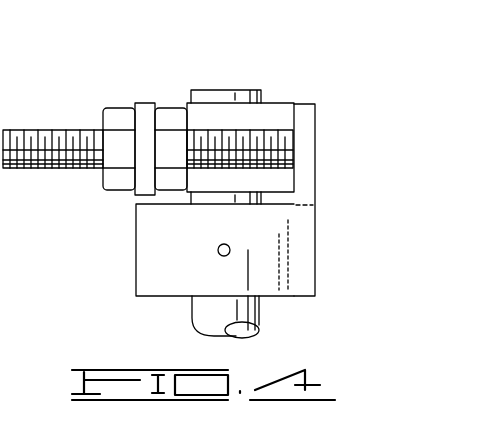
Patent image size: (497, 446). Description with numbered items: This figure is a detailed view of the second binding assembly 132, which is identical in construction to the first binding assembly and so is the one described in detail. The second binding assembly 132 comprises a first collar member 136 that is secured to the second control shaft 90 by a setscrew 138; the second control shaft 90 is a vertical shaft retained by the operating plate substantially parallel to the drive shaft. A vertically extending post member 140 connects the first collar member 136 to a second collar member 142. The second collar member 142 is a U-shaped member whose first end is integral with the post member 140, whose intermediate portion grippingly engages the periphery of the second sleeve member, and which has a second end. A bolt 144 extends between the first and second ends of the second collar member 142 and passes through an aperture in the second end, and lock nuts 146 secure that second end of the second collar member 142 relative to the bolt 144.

The second binding assembly 132 is at (255, 44).
The second control shaft 90 is at (218, 90).
The second collar member 142 is at (145, 103).
The bolt 144 is at (27, 128).
The lock nuts 146 is at (160, 199).
The first collar member 136 is at (147, 258).
The setscrew 138 is at (229, 255).
The post member 140 is at (309, 222).